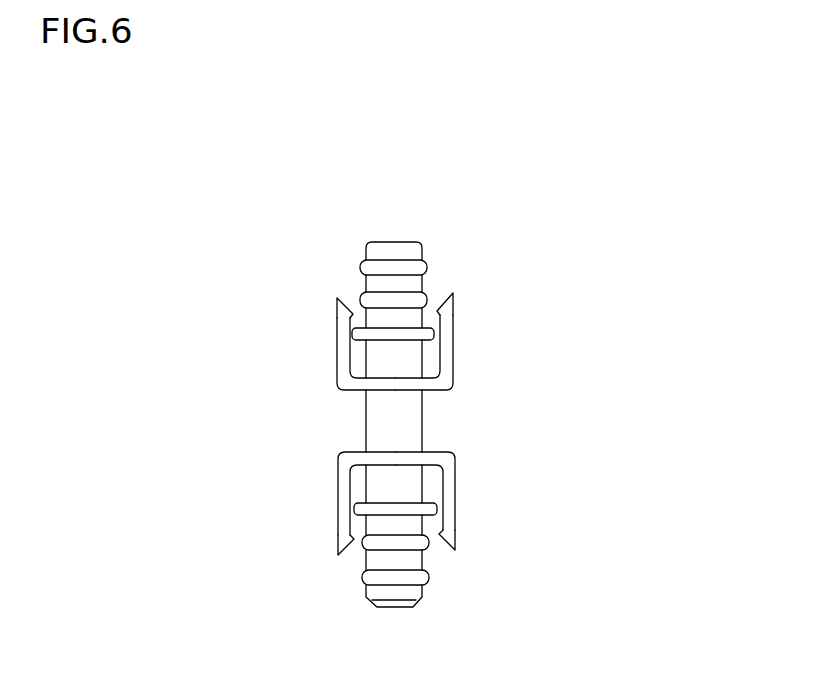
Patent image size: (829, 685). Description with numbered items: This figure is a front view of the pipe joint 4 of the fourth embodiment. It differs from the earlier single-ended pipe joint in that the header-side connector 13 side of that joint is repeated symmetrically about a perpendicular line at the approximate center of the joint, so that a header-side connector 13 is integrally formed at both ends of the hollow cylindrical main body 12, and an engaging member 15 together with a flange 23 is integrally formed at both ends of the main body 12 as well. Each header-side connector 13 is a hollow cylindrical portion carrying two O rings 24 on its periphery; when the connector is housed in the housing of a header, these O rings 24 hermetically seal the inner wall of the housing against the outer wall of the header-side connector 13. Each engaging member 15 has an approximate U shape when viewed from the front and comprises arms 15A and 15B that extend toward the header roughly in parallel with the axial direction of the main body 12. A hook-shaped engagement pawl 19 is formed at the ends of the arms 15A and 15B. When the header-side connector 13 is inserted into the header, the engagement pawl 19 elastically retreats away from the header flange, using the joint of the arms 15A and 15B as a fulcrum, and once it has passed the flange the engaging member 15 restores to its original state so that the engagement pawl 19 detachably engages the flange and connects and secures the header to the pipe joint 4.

The pipe joint 4 is at (708, 369).
The main body 12 is at (424, 422).
The header-side connector 13 is at (362, 290).
The O ring 24 is at (426, 300).
The engaging member 15 is at (350, 338).
The arm 15A is at (453, 357).
The arm 15B is at (340, 366).
The engagement pawl 19 is at (336, 308).
The flange 23 is at (437, 334).